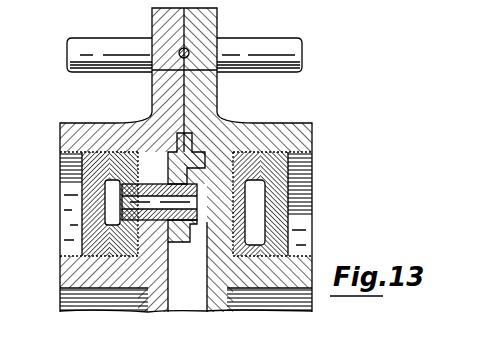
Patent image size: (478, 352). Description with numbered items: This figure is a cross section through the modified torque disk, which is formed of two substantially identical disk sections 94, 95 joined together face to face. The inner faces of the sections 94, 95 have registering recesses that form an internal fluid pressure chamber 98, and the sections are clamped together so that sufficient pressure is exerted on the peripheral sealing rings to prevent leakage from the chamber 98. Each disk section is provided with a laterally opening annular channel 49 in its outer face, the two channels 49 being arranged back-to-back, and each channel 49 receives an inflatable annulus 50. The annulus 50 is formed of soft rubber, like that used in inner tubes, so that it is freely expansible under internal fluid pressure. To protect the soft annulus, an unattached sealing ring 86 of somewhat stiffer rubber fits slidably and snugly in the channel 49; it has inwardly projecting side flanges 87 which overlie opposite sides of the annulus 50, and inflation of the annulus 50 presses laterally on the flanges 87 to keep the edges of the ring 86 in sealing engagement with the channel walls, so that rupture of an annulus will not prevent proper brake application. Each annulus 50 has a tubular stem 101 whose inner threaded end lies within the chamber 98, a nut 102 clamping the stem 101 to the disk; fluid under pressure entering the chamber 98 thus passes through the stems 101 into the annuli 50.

The annular channel 49 is at (70, 171).
The inflatable annulus 50 is at (110, 231).
The sealing ring 86 is at (72, 198).
The side flange 87 is at (115, 123).
The disk section 94 is at (152, 98).
The disk section 95 is at (220, 93).
The fluid pressure chamber 98 is at (183, 306).
The tubular stem 101 is at (153, 165).
The nut 102 is at (186, 244).